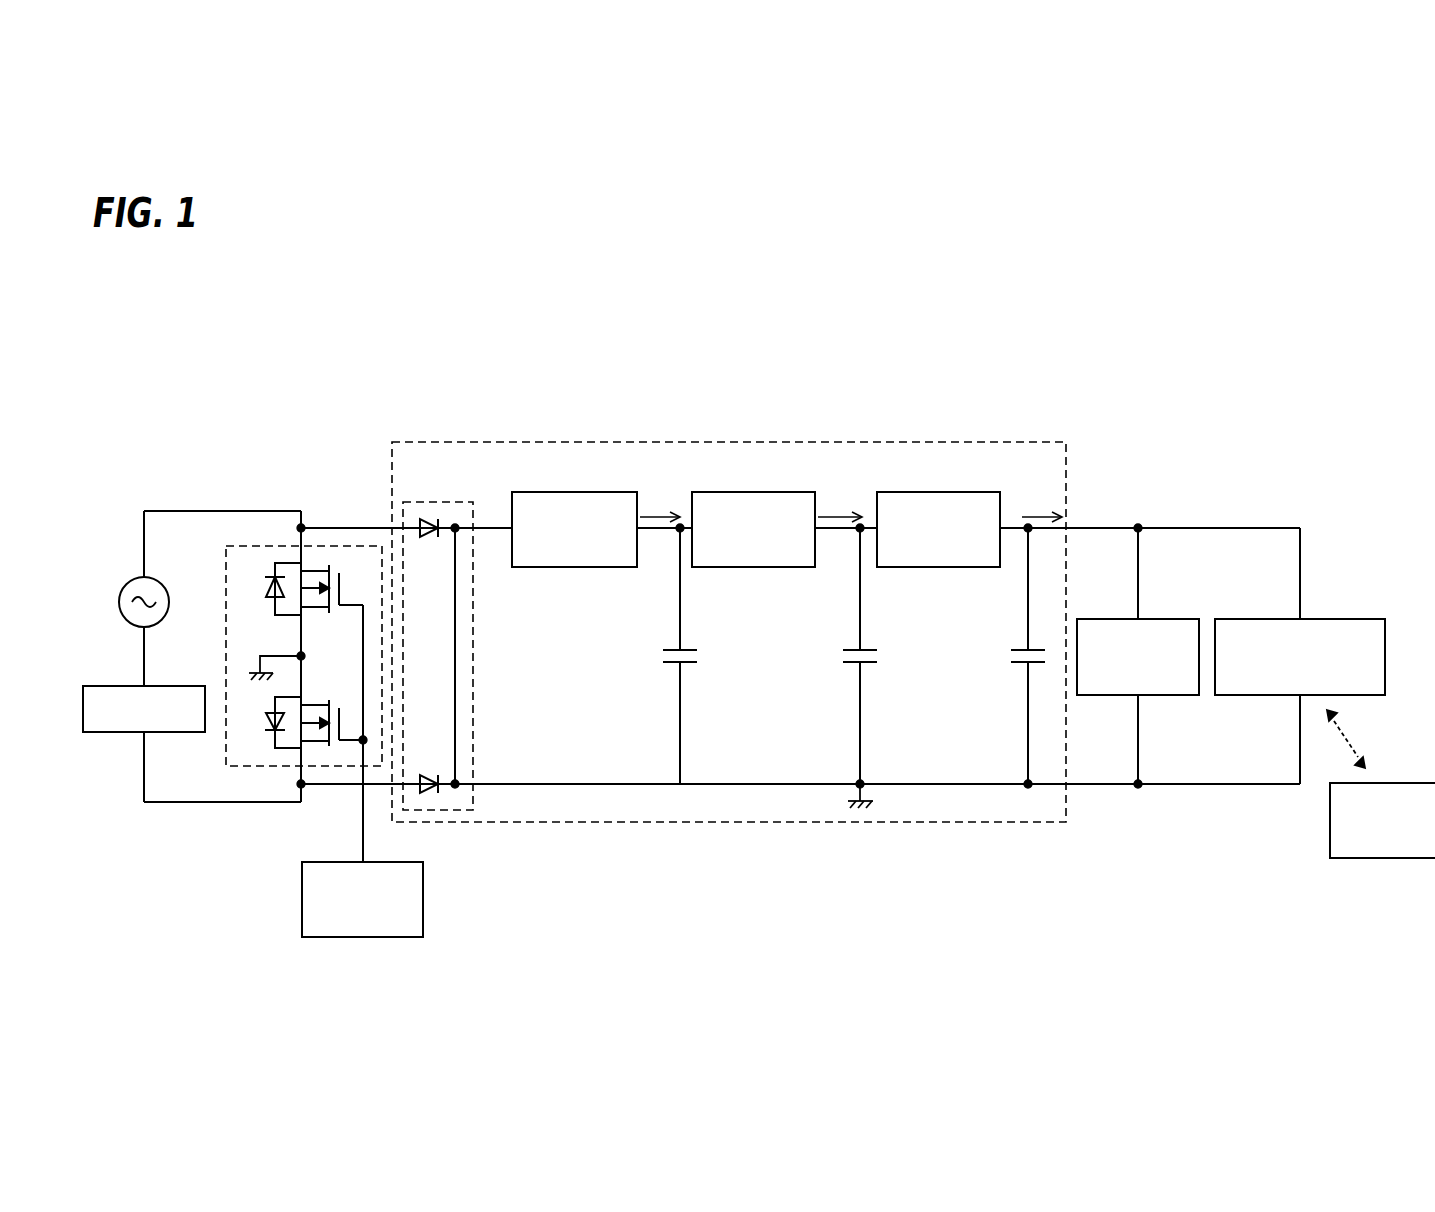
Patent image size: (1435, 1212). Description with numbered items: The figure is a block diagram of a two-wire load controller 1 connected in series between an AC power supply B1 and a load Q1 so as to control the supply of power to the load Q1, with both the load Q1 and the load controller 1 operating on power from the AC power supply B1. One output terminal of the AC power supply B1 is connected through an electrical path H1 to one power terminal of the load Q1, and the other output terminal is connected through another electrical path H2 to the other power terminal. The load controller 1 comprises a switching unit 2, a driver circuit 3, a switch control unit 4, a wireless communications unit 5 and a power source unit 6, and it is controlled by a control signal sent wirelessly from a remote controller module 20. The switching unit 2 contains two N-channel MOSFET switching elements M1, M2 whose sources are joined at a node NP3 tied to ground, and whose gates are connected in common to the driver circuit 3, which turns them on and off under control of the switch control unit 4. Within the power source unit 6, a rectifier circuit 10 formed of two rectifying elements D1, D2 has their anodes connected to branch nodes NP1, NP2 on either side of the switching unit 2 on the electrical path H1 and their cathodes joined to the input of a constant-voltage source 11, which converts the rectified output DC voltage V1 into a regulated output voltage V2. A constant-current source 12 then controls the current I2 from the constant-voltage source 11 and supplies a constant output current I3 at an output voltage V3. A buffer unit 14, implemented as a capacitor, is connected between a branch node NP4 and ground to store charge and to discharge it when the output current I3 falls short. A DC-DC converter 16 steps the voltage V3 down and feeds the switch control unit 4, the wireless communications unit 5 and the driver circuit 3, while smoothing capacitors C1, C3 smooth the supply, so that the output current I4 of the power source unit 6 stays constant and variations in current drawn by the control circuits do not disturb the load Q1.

The load controller 1 is at (1055, 388).
The switching unit 2 is at (226, 565).
The driver circuit 3 is at (423, 885).
The switch control unit 4 is at (1167, 618).
The wireless communications unit 5 is at (1329, 618).
The power source unit 6 is at (423, 438).
The rectifier circuit 10 is at (474, 680).
The constant-voltage source 11 is at (568, 567).
The constant-current source 12 is at (750, 567).
The buffer unit 14 is at (814, 668).
The DC-DC converter 16 is at (957, 567).
The remote controller module 20 is at (1407, 782).
The AC power supply B1 is at (128, 578).
The electrical path H1 is at (224, 507).
The electrical path H2 is at (142, 657).
The load Q1 is at (182, 684).
The switching element M1 is at (314, 606).
The switching element M2 is at (314, 711).
The branch node NP1 is at (303, 524).
The branch node NP2 is at (304, 789).
The node NP3 is at (299, 655).
The branch node NP4 is at (861, 531).
The rectifying element D1 is at (434, 548).
The rectifying element D2 is at (434, 767).
The smoothing capacitor C1 is at (664, 656).
The smoothing capacitor C3 is at (1012, 656).
The output DC voltage V1 is at (492, 533).
The output voltage V2 is at (658, 533).
The output voltage V3 is at (837, 533).
The output DC current I2 is at (660, 505).
The output current I3 is at (840, 505).
The output current I4 is at (1042, 505).